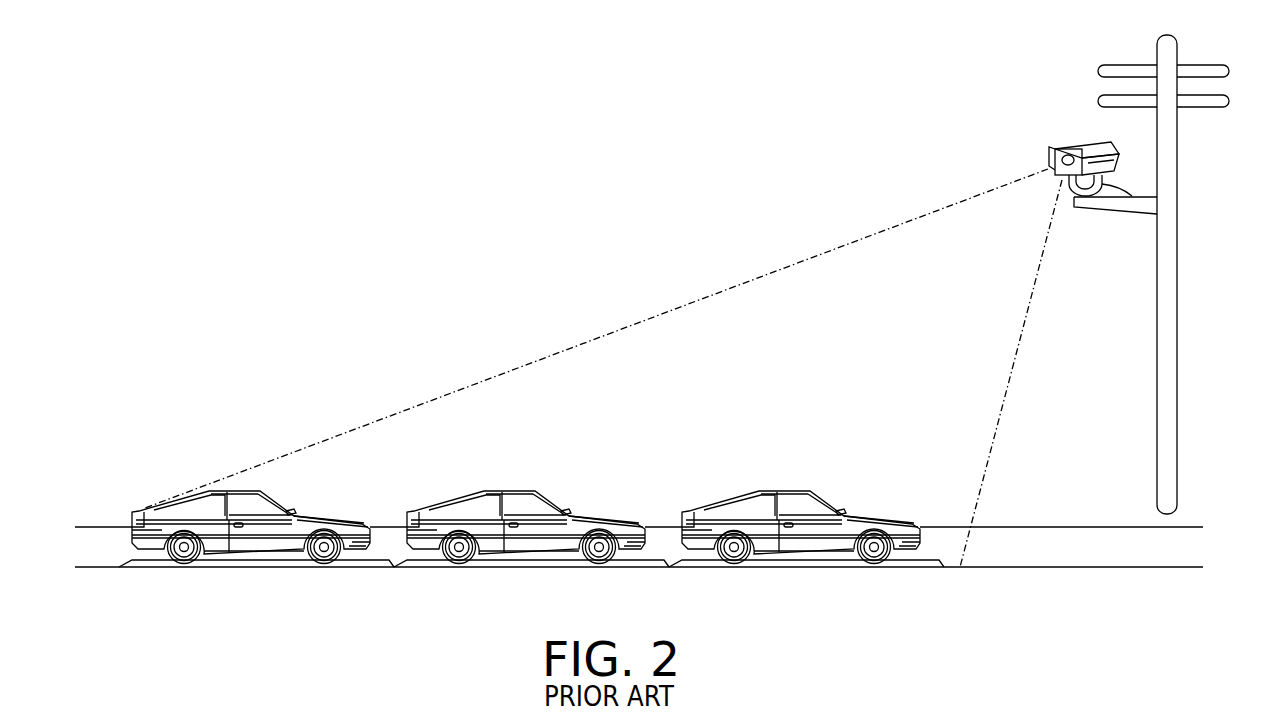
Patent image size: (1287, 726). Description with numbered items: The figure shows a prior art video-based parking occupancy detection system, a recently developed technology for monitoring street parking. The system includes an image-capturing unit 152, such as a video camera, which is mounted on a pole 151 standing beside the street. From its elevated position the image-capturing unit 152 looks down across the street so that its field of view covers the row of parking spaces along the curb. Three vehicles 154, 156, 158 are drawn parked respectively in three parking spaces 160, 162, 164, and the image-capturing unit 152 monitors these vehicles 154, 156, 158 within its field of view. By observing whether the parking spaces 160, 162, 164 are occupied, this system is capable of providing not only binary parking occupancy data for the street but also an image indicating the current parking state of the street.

The pole 151 is at (1169, 229).
The image-capturing unit 152 is at (1062, 137).
The vehicle 154 is at (297, 484).
The vehicle 156 is at (567, 484).
The vehicle 158 is at (837, 484).
The parking space 160 is at (242, 555).
The parking space 162 is at (531, 555).
The parking space 164 is at (798, 555).